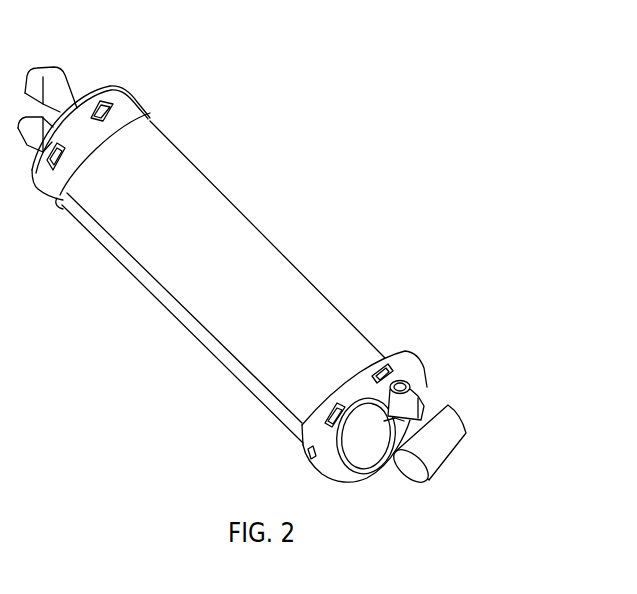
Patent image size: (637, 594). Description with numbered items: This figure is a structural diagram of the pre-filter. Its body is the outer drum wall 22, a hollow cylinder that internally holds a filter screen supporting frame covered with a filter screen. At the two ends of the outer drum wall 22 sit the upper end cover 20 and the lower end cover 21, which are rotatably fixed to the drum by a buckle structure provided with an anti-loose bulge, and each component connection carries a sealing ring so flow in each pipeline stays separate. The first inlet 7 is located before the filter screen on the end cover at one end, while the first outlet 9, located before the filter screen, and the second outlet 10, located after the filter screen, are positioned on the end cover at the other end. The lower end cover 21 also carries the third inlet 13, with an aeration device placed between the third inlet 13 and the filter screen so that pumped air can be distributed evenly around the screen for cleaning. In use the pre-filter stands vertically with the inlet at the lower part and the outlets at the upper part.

The first inlet 7 is at (433, 447).
The first outlet 9 is at (70, 90).
The second outlet 10 is at (30, 125).
The third inlet 13 is at (390, 407).
The upper end cover 20 is at (122, 112).
The lower end cover 21 is at (355, 387).
The outer drum wall 22 is at (235, 237).